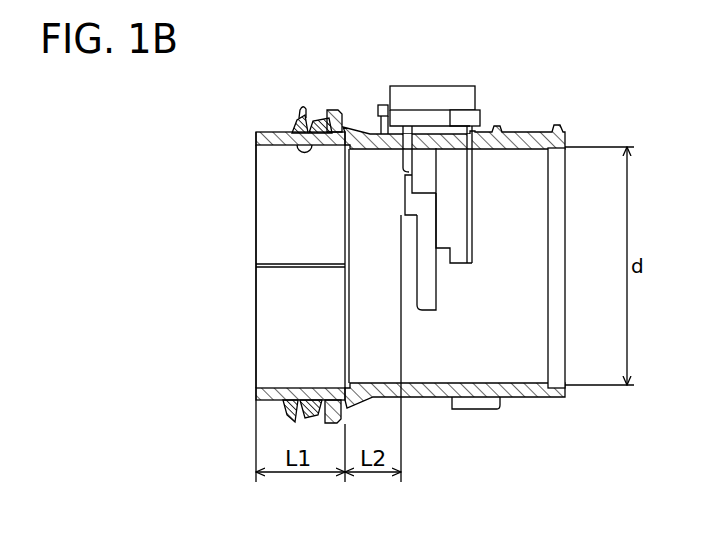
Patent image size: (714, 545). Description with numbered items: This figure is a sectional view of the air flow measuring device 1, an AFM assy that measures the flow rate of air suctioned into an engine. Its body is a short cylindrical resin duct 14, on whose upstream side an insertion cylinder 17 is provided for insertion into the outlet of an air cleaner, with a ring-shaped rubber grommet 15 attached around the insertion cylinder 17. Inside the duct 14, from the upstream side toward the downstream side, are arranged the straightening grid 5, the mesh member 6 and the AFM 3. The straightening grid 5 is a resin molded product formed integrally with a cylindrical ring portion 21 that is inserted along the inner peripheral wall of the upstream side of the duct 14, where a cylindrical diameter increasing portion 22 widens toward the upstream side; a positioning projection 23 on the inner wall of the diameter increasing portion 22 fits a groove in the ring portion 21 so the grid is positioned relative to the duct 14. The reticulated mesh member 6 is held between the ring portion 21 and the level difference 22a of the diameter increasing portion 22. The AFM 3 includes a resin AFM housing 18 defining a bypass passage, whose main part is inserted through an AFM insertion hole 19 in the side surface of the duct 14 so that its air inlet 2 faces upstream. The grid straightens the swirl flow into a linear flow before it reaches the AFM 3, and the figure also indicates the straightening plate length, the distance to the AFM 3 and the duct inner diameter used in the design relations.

The air flow measuring device 1 is at (530, 438).
The air inlet 2 is at (425, 275).
The AFM 3 is at (488, 83).
The straightening grid 5 is at (250, 184).
The mesh member 6 is at (350, 283).
The duct 14 is at (527, 134).
The grommet 15 is at (295, 116).
The insertion cylinder 17 is at (262, 132).
The AFM housing 18 is at (404, 195).
The AFM insertion hole 19 is at (390, 128).
The ring portion 21 is at (270, 208).
The diameter increasing portion 22 is at (299, 121).
The level difference 22a is at (329, 117).
The positioning projection 23 is at (272, 265).